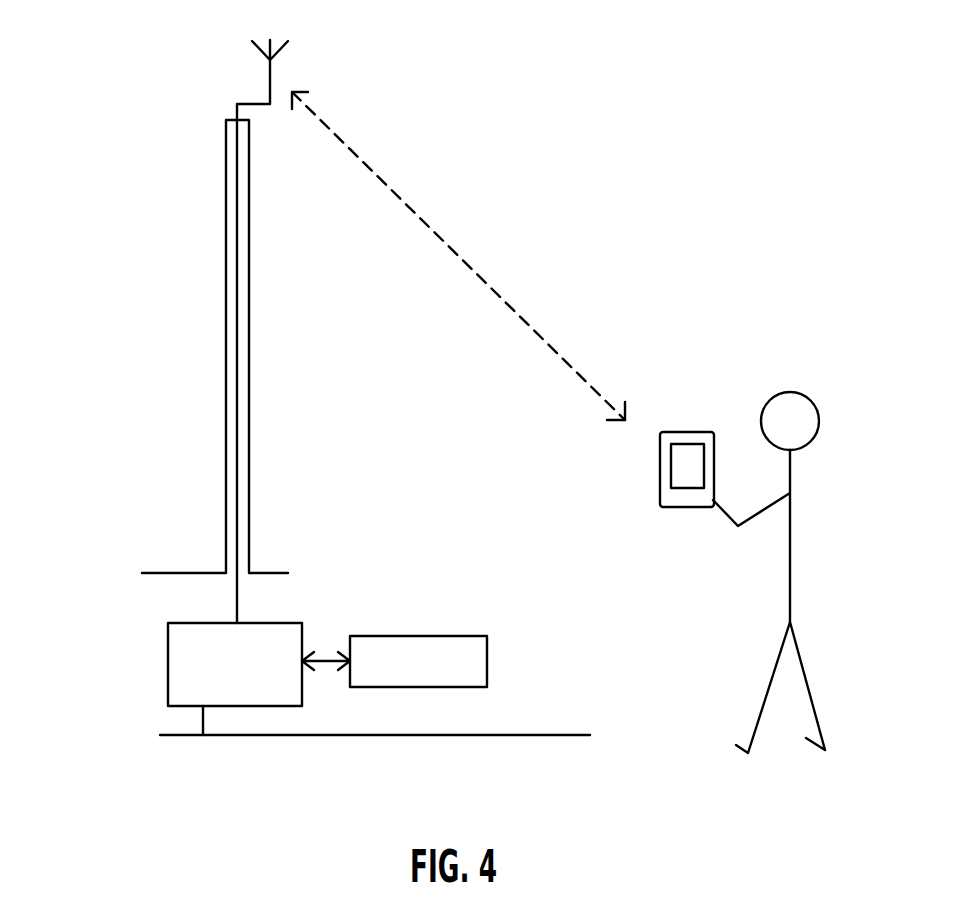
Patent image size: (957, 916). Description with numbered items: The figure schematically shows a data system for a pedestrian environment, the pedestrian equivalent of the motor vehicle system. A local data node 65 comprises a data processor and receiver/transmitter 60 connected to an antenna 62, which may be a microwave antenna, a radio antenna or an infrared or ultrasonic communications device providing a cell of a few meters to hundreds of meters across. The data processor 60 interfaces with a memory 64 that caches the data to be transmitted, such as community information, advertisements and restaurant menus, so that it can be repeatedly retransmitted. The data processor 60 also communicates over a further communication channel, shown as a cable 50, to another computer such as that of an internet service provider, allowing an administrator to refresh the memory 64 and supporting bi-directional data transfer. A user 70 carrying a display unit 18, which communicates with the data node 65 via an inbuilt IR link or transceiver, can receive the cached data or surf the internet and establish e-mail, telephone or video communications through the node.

The antenna 62 is at (281, 61).
The local data node 65 is at (123, 126).
The data processor and receiver/transmitter 60 is at (168, 649).
The memory 64 is at (422, 636).
The cable 50 is at (295, 735).
The display unit 18 is at (672, 507).
The user 70 is at (797, 393).